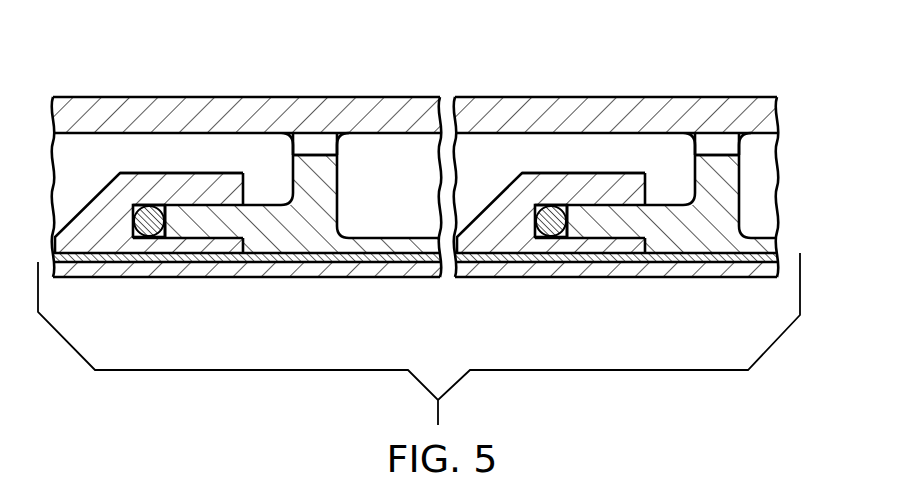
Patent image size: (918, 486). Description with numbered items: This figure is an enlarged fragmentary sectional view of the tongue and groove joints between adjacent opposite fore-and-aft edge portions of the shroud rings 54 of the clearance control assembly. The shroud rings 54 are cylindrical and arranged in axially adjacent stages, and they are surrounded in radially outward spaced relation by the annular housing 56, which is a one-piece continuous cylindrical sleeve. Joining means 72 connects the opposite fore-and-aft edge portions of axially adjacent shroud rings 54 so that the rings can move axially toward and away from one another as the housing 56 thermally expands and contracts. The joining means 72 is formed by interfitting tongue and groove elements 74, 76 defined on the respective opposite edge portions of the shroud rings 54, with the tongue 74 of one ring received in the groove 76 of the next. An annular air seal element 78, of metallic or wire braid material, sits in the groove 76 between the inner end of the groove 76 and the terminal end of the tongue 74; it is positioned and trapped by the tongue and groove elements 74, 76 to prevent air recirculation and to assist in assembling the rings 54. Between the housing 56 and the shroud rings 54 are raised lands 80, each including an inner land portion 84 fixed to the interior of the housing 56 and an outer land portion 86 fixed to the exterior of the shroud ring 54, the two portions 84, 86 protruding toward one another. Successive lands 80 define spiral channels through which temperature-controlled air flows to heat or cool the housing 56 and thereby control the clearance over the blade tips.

The shroud ring 54 is at (222, 278).
The annular housing 56 is at (127, 96).
The joining means 72 is at (253, 172).
The tongue element 74 is at (193, 228).
The groove element 76 is at (195, 174).
The annular air seal element 78 is at (150, 223).
The raised land 80 is at (315, 153).
The inner land portion 84 is at (322, 158).
The outer land portion 86 is at (305, 155).